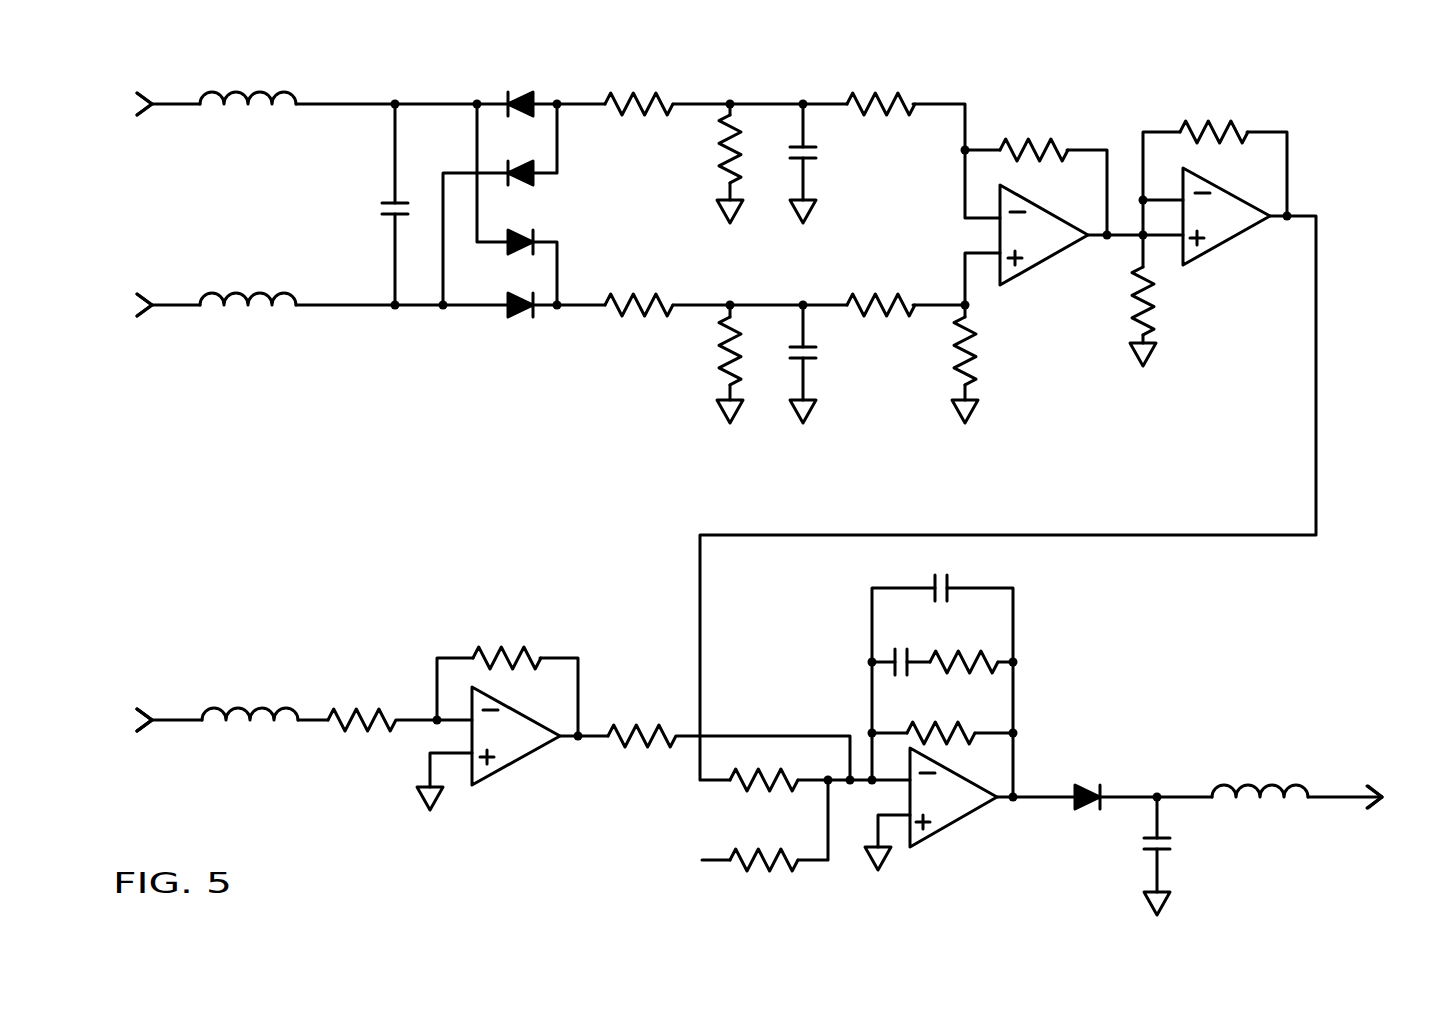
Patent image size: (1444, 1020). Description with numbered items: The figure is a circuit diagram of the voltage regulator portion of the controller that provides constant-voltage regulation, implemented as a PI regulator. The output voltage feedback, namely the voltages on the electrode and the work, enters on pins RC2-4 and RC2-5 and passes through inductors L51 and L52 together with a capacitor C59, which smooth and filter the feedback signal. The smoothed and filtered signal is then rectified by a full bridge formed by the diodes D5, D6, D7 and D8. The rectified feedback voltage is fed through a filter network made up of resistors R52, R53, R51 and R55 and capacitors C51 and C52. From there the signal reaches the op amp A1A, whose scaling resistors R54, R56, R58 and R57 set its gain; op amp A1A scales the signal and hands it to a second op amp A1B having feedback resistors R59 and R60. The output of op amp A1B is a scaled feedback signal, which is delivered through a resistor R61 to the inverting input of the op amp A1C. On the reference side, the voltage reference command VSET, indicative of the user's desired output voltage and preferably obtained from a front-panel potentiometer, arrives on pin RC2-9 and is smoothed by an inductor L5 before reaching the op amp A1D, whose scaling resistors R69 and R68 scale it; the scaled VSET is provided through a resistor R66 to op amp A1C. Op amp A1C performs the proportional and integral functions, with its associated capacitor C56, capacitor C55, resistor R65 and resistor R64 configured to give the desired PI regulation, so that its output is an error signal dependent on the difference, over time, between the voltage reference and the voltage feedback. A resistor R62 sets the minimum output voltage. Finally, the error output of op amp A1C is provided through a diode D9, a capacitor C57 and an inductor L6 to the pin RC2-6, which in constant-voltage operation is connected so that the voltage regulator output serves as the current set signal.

The pin RC2-4 is at (139, 127).
The pin RC2-5 is at (139, 330).
The inductor L51 is at (248, 124).
The inductor L52 is at (248, 325).
The capacitor C59 is at (369, 212).
The diode D8 is at (520, 85).
The diode D7 is at (520, 155).
The diode D5 is at (520, 225).
The diode D6 is at (520, 290).
The resistor R52 is at (639, 84).
The scaling resistor R54 is at (881, 83).
The resistor R53 is at (703, 149).
The capacitor C51 is at (833, 155).
The resistor R51 is at (639, 287).
The scaling resistor R56 is at (881, 287).
The resistor R55 is at (703, 351).
The capacitor C52 is at (834, 358).
The scaling resistor R57 is at (992, 351).
The scaling resistor R58 is at (1034, 132).
The op amp A1A is at (1044, 235).
The feedback resistor R60 is at (1214, 116).
The feedback resistor R59 is at (1172, 301).
The op amp A1B is at (1226, 216).
The voltage reference command VSET is at (133, 705).
The pin RC2-9 is at (137, 743).
The inductor L5 is at (250, 699).
The scaling resistor R69 is at (362, 705).
The scaling resistor R68 is at (507, 641).
The op amp A1D is at (516, 736).
The resistor R66 is at (642, 719).
The resistor R61 is at (764, 765).
The resistor R62 is at (764, 845).
The capacitor C56 is at (937, 571).
The capacitor C55 is at (900, 647).
The resistor R65 is at (964, 646).
The resistor R64 is at (941, 718).
The op amp A1C is at (953, 797).
The diode D9 is at (1086, 779).
The capacitor C57 is at (1184, 845).
The inductor L6 is at (1260, 774).
The pin RC2-6 is at (1404, 781).